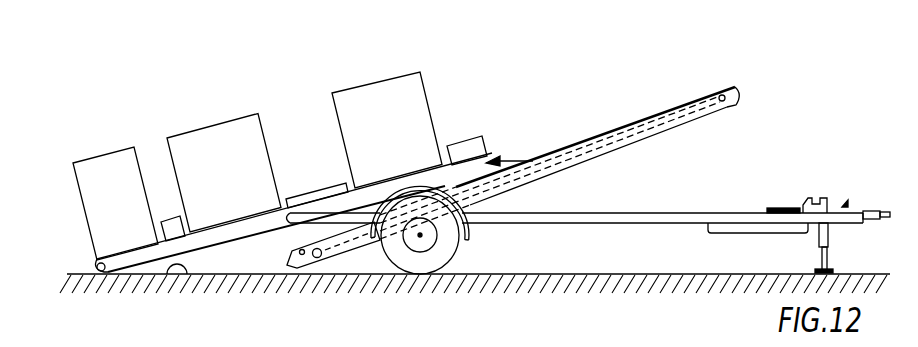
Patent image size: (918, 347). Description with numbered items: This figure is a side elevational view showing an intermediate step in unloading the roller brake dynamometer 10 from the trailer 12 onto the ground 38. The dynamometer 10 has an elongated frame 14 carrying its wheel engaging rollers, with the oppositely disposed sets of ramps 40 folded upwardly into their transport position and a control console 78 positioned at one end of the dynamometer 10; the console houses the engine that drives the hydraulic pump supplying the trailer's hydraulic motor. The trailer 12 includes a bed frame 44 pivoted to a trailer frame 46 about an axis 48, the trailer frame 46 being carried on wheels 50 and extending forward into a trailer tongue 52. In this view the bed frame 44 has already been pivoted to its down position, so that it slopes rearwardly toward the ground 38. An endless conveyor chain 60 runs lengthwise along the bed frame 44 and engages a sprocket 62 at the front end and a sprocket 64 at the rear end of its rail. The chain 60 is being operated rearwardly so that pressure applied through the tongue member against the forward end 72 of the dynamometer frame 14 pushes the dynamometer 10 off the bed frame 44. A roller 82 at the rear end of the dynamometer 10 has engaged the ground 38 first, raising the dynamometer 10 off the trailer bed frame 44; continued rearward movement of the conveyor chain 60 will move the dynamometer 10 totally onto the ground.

The roller brake dynamometer 10 is at (479, 166).
The trailer 12 is at (842, 207).
The elongated frame 14 is at (467, 170).
The ground 38 is at (167, 278).
The ramps 40 is at (362, 137).
The bed frame 44 is at (725, 86).
The trailer frame 46 is at (760, 211).
The axis 48 is at (421, 238).
The wheels 50 is at (443, 254).
The trailer tongue 52 is at (863, 207).
The endless conveyor chain 60 is at (684, 92).
The sprocket 62 is at (706, 97).
The sprocket 64 is at (326, 273).
The forward end of the dynamometer frame 72 is at (500, 160).
The control console 78 is at (98, 191).
The roller 82 is at (117, 274).